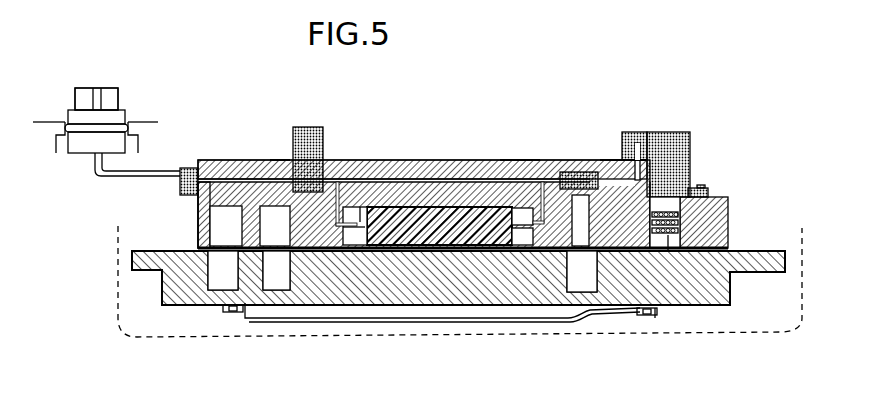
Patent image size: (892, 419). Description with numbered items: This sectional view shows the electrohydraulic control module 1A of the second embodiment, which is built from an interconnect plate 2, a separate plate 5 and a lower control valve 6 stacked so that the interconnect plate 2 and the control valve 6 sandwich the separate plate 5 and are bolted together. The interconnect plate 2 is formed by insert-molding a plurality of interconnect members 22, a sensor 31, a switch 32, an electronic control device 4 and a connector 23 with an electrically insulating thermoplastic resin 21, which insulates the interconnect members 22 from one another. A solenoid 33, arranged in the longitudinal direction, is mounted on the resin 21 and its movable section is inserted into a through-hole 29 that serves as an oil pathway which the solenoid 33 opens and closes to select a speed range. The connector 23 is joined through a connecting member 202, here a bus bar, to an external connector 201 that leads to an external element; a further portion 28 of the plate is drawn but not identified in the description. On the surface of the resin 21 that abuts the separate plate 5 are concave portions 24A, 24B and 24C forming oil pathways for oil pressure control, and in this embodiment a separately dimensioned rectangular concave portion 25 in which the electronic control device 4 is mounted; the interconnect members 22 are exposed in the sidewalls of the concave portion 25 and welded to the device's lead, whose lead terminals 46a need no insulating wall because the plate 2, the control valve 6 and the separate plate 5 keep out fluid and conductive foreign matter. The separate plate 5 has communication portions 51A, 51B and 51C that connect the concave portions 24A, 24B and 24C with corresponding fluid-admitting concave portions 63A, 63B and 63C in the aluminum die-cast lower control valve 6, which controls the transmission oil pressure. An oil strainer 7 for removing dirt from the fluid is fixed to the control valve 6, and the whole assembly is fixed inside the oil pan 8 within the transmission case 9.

The electrohydraulic control module 1A is at (613, 58).
The interconnect plate 2 is at (444, 224).
The electronic control device 4 is at (445, 207).
The separate plate 5 is at (730, 249).
The lower control valve 6 is at (788, 244).
The oil strainer 7 is at (598, 312).
The oil pan 8 is at (803, 284).
The transmission case 9 is at (48, 122).
The resin 21 is at (247, 158).
The interconnect members 22 is at (213, 158).
The connector 23 is at (184, 168).
The concave portion 24A is at (197, 216).
The concave portion 24B is at (277, 160).
The concave portion 24C is at (612, 160).
The concave portion 25 is at (355, 205).
The top wall 28 is at (517, 160).
The through-hole 29 is at (668, 250).
The sensor 31 is at (315, 127).
The switch 32 is at (580, 172).
The solenoid 33 is at (688, 132).
The lead terminals 46a is at (367, 246).
The communication portion 51A is at (219, 251).
The communication portion 51B is at (281, 251).
The communication portion 51C is at (579, 243).
The concave portion 63A is at (178, 303).
The concave portion 63B is at (245, 319).
The concave portion 63C is at (563, 306).
The external connector 201 is at (127, 110).
The connecting member 202 is at (113, 184).